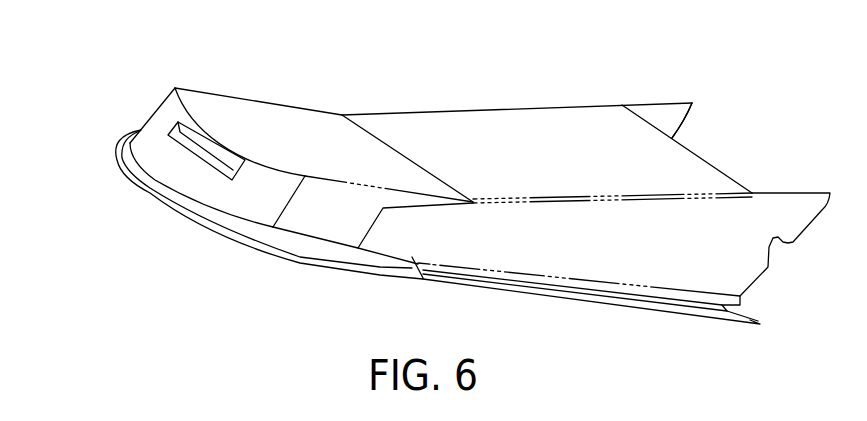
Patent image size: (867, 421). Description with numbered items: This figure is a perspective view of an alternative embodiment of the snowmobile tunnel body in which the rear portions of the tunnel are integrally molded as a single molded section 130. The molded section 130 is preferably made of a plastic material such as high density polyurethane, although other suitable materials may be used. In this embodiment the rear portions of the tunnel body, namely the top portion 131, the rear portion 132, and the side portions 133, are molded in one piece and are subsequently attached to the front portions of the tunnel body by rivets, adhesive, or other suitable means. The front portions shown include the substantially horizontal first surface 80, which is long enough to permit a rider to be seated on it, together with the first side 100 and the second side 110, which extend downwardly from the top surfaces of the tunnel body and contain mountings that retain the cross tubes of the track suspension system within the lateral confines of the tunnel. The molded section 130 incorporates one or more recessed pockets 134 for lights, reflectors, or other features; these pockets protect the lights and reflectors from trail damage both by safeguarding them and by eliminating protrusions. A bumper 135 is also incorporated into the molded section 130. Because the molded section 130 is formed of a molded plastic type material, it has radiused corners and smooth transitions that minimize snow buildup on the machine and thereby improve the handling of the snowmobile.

The first surface 80 is at (497, 161).
The first side 100 is at (669, 119).
The second side 110 is at (562, 252).
The molded section 130 is at (257, 83).
The top portion 131 is at (312, 143).
The rear portion 132 is at (273, 209).
The side portions 133 is at (340, 220).
The recessed pockets 134 is at (193, 143).
The bumper 135 is at (119, 177).